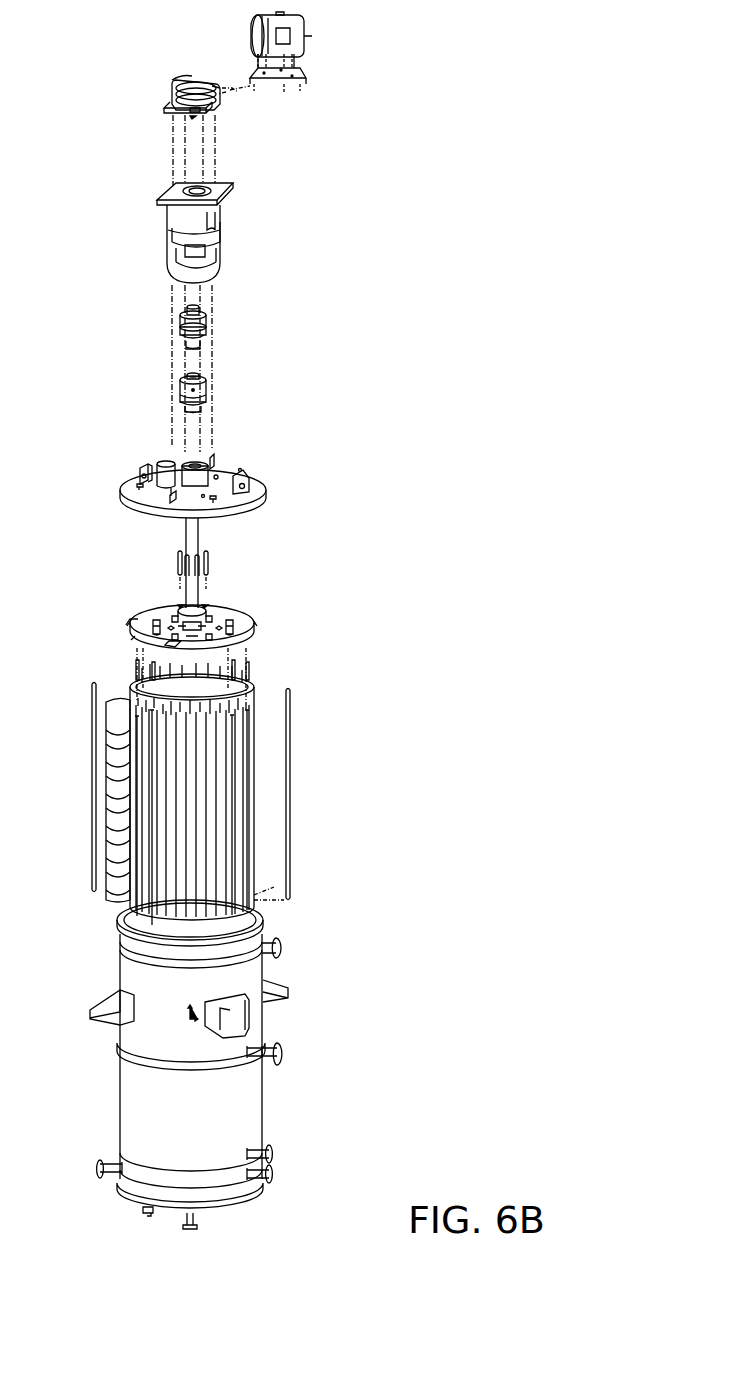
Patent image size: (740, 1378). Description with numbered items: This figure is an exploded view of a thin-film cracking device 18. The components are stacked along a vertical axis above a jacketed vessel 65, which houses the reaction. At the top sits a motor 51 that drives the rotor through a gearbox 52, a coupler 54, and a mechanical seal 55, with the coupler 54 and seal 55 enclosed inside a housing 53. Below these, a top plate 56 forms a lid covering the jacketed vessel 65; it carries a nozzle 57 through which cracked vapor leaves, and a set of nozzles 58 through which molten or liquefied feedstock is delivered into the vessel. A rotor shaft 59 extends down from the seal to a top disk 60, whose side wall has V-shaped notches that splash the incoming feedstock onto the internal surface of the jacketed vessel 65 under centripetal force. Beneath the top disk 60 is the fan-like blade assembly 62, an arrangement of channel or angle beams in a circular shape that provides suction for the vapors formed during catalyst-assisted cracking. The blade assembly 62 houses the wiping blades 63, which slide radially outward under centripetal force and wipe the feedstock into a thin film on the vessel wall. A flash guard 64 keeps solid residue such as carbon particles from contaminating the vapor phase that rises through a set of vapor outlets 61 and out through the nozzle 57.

The cracking device 18 is at (385, 304).
The motor 51 is at (300, 26).
The gearbox 52 is at (172, 82).
The housing 53 is at (215, 265).
The coupler 54 is at (208, 325).
The mechanical seal 55 is at (208, 387).
The top plate 56 is at (204, 484).
The nozzle 57 is at (165, 470).
The nozzles 58 is at (216, 498).
The rotor shaft 59 is at (200, 531).
The top disk 60 is at (254, 622).
The vapor outlets 61 is at (128, 624).
The blade assembly 62 is at (254, 688).
The wiping blades 63 is at (291, 726).
The flash guard 64 is at (118, 700).
The jacketed vessel 65 is at (252, 978).